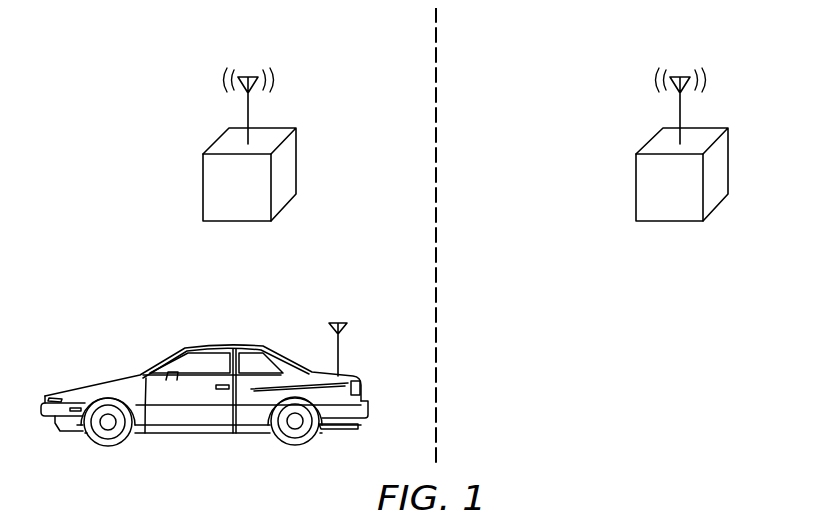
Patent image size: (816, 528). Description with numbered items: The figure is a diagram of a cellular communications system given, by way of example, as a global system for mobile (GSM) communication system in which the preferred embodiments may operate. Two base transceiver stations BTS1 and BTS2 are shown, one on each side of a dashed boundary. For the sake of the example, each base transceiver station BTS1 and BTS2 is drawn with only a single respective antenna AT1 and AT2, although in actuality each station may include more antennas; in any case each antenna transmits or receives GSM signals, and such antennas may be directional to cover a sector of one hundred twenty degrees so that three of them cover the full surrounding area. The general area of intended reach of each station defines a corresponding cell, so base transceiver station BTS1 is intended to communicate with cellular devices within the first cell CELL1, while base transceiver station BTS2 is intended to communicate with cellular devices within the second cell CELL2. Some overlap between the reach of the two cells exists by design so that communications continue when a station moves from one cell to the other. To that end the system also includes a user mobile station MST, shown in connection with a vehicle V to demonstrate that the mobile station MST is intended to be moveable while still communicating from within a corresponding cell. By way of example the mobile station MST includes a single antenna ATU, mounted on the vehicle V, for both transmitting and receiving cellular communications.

The Cell 1 CELL1 is at (239, 115).
The Cell 2 CELL2 is at (681, 115).
The base transceiver station BTS1 is at (249, 174).
The base transceiver station BTS2 is at (682, 174).
The antenna AT1 is at (246, 113).
The antenna AT2 is at (681, 114).
The user mobile station MST is at (231, 327).
The vehicle V is at (101, 375).
The antenna ATU is at (338, 354).